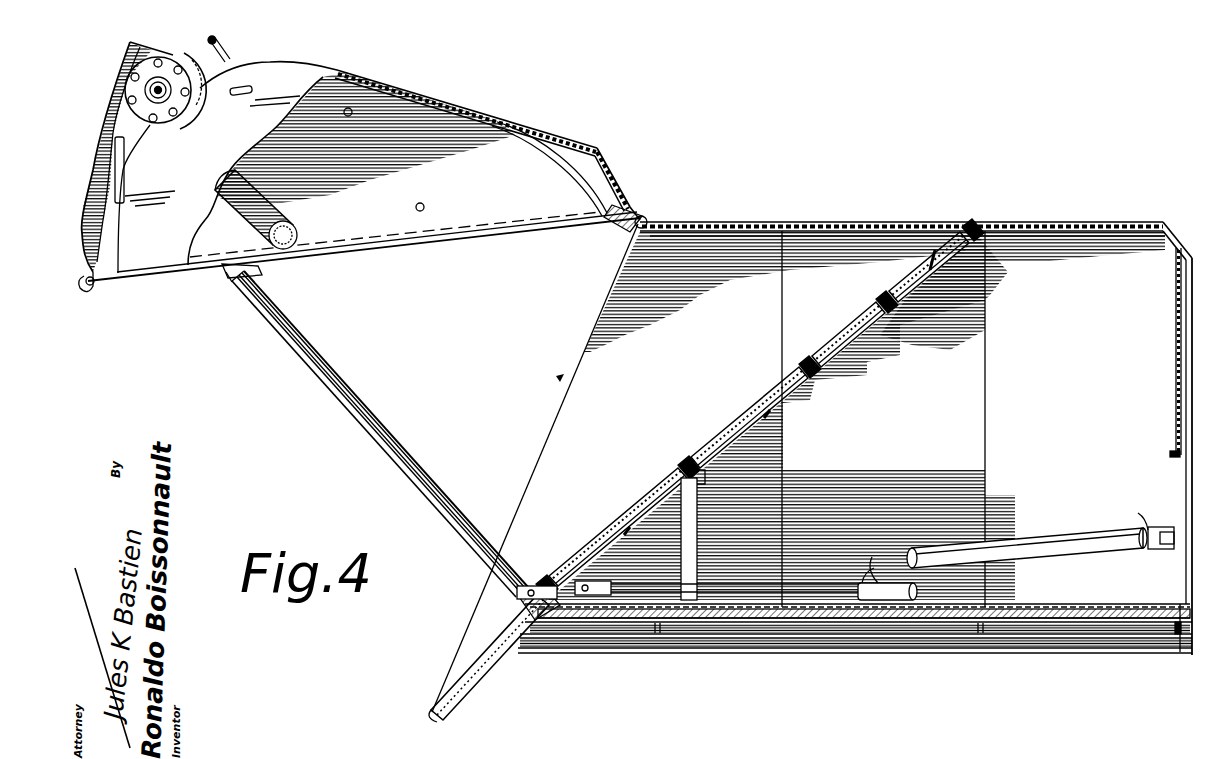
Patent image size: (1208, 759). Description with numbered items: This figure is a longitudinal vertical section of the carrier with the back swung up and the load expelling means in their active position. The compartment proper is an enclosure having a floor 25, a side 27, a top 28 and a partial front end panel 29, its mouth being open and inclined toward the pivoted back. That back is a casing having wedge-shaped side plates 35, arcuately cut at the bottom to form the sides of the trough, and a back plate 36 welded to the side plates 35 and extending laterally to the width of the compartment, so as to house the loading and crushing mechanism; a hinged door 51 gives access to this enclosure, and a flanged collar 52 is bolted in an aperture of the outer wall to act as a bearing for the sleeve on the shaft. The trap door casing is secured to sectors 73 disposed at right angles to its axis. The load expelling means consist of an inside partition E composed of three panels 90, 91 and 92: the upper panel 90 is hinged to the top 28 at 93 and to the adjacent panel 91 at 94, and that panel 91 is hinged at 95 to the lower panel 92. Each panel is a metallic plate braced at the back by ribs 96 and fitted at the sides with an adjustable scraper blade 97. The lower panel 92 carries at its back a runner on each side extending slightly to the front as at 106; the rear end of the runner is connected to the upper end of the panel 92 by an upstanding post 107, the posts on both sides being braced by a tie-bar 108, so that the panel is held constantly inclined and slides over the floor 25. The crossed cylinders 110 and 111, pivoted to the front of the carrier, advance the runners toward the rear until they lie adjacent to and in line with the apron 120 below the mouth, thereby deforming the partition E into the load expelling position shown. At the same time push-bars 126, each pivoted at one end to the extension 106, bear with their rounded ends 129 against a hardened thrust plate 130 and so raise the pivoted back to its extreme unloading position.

The floor 25 is at (1088, 605).
The side 27 is at (708, 468).
The top 28 is at (845, 222).
The partial front end panel 29 is at (1177, 397).
The wedge-shaped side plates 35 is at (483, 222).
The back plate 36 is at (437, 100).
The hinged door 51 is at (283, 73).
The flanged collar 52 is at (163, 118).
The sectors 73 is at (267, 213).
The upper panel 90 is at (902, 280).
The intermediate panel 91 is at (735, 424).
The lower panel 92 is at (634, 513).
The hinge 93 is at (970, 224).
The hinge 94 is at (820, 387).
The hinge 95 is at (687, 466).
The ribs 96 is at (905, 312).
The scraper blade 97 is at (852, 311).
The runner extension 106 is at (539, 578).
The upstanding post 107 is at (703, 503).
The tie-bar 108 is at (681, 538).
The cylinder 110 is at (892, 577).
The cylinder 111 is at (1048, 538).
The apron 120 is at (480, 650).
The push-bars 126 is at (425, 456).
The rounded end 129 is at (240, 272).
The hardened thrust plate 130 is at (223, 274).
The partition E is at (746, 398).